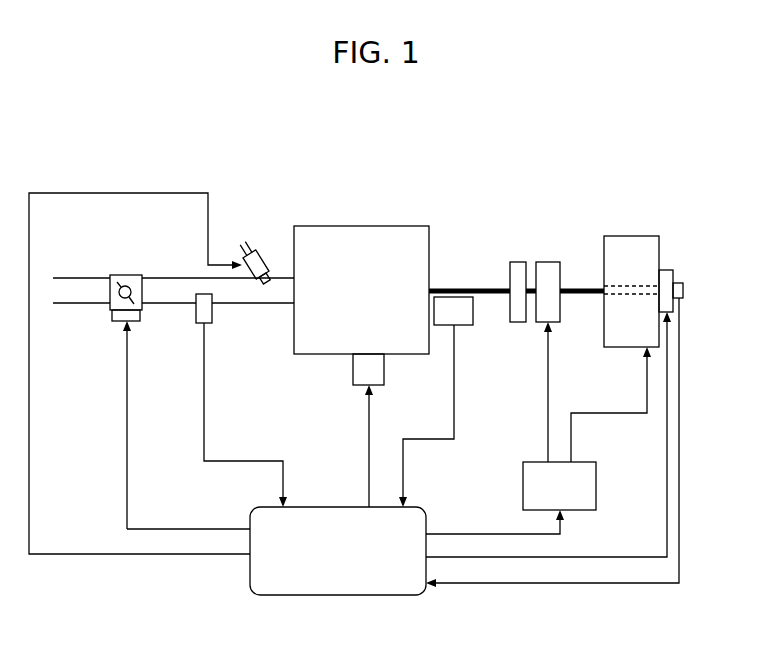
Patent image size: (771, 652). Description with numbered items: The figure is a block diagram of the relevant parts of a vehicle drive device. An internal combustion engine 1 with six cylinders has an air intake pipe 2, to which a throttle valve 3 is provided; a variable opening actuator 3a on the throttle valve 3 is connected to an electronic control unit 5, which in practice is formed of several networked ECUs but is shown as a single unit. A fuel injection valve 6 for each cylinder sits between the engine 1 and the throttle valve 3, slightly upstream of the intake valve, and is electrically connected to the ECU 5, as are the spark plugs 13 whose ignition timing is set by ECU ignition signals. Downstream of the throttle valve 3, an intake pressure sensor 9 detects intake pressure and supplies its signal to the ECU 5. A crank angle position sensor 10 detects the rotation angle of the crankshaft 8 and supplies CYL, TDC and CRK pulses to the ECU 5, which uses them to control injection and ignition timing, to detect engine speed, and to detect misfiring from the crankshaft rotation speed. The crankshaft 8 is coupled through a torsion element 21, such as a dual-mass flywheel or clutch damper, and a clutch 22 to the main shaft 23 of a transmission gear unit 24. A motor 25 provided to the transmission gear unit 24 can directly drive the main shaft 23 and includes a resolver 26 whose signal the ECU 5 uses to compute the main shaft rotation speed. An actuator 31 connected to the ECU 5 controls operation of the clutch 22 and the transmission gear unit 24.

The internal combustion engine 1 is at (327, 226).
The air intake pipe 2 is at (245, 305).
The throttle valve 3 is at (110, 280).
The variable opening actuator 3a is at (110, 313).
The electronic control unit 5 is at (350, 506).
The fuel injection valve 6 is at (266, 254).
The crankshaft 8 is at (457, 288).
The intake pressure sensor 9 is at (201, 326).
The crank angle position sensor 10 is at (464, 328).
The spark plug 13 is at (378, 387).
The torsion element 21 is at (516, 261).
The clutch 22 is at (548, 261).
The main shaft 23 is at (578, 288).
The transmission gear unit 24 is at (640, 235).
The motor 25 is at (668, 269).
The resolver 26 is at (684, 290).
The actuator 31 is at (523, 487).